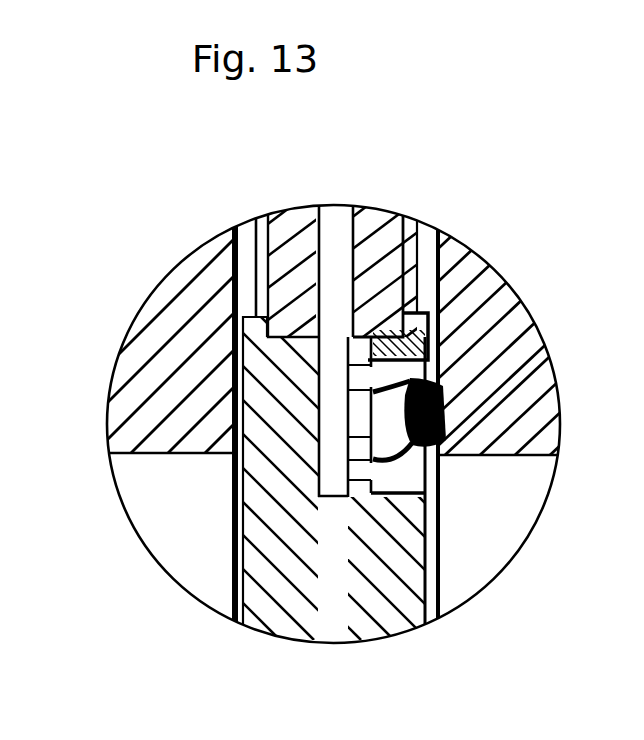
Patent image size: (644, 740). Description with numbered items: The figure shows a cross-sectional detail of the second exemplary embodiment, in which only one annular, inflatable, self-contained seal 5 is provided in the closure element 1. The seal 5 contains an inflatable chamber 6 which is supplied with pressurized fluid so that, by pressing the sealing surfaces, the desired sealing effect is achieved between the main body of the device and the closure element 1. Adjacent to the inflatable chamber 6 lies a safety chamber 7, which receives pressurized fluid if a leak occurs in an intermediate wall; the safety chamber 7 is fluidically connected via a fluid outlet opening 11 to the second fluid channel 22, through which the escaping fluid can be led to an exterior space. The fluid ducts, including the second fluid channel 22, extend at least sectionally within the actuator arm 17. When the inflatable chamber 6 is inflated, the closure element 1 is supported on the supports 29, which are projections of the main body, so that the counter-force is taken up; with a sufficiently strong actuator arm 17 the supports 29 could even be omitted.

The closure element 1 is at (285, 522).
The seal 5 is at (378, 358).
The inflatable chamber 6 is at (393, 415).
The safety chamber 7 is at (365, 378).
The fluid outlet opening 11 is at (395, 332).
The actuator arm 17 is at (378, 245).
The second fluid channel 22 is at (330, 222).
The supports 29 is at (238, 462).